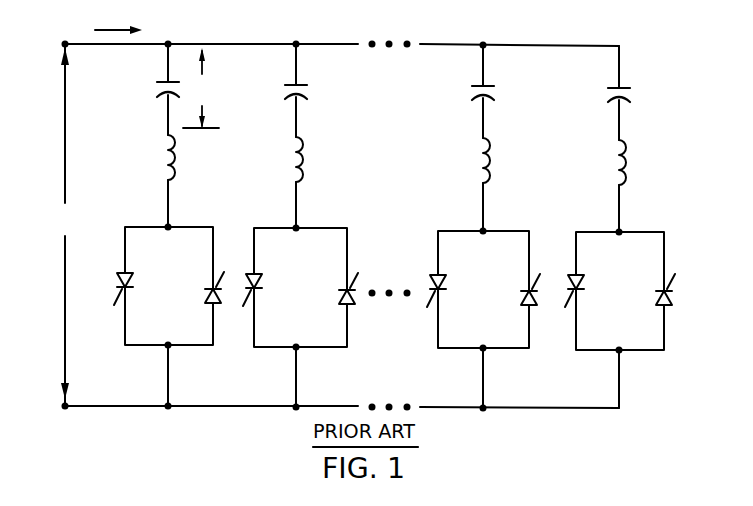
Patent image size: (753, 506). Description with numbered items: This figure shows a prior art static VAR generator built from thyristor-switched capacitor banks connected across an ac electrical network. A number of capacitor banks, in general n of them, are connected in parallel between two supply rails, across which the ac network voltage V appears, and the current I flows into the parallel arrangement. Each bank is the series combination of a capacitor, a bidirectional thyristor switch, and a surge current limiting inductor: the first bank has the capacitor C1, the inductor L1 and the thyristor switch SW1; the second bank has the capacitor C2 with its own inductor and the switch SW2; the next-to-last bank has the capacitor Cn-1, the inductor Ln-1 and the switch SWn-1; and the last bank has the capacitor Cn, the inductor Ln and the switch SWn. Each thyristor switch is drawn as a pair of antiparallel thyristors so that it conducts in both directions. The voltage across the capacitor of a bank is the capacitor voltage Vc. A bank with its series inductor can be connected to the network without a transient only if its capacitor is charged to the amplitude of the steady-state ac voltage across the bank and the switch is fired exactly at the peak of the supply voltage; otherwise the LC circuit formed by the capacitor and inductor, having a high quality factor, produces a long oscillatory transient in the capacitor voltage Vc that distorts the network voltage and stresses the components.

The current I is at (114, 27).
The ac network voltage V is at (65, 225).
The capacitor voltage Vc is at (201, 88).
The capacitor C1 is at (154, 91).
The surge current limiting inductor L1 is at (162, 158).
The capacitor C2 is at (283, 93).
The capacitor Cn-1 is at (470, 93).
The surge current limiting inductor Ln-1 is at (478, 160).
The capacitor Cn is at (605, 93).
The surge current limiting inductor Ln is at (613, 163).
The bidirectional thyristor switch SW1 is at (185, 299).
The bidirectional thyristor switch SW2 is at (313, 300).
The bidirectional thyristor switch SWn-1 is at (503, 301).
The bidirectional thyristor switch SWn is at (633, 301).